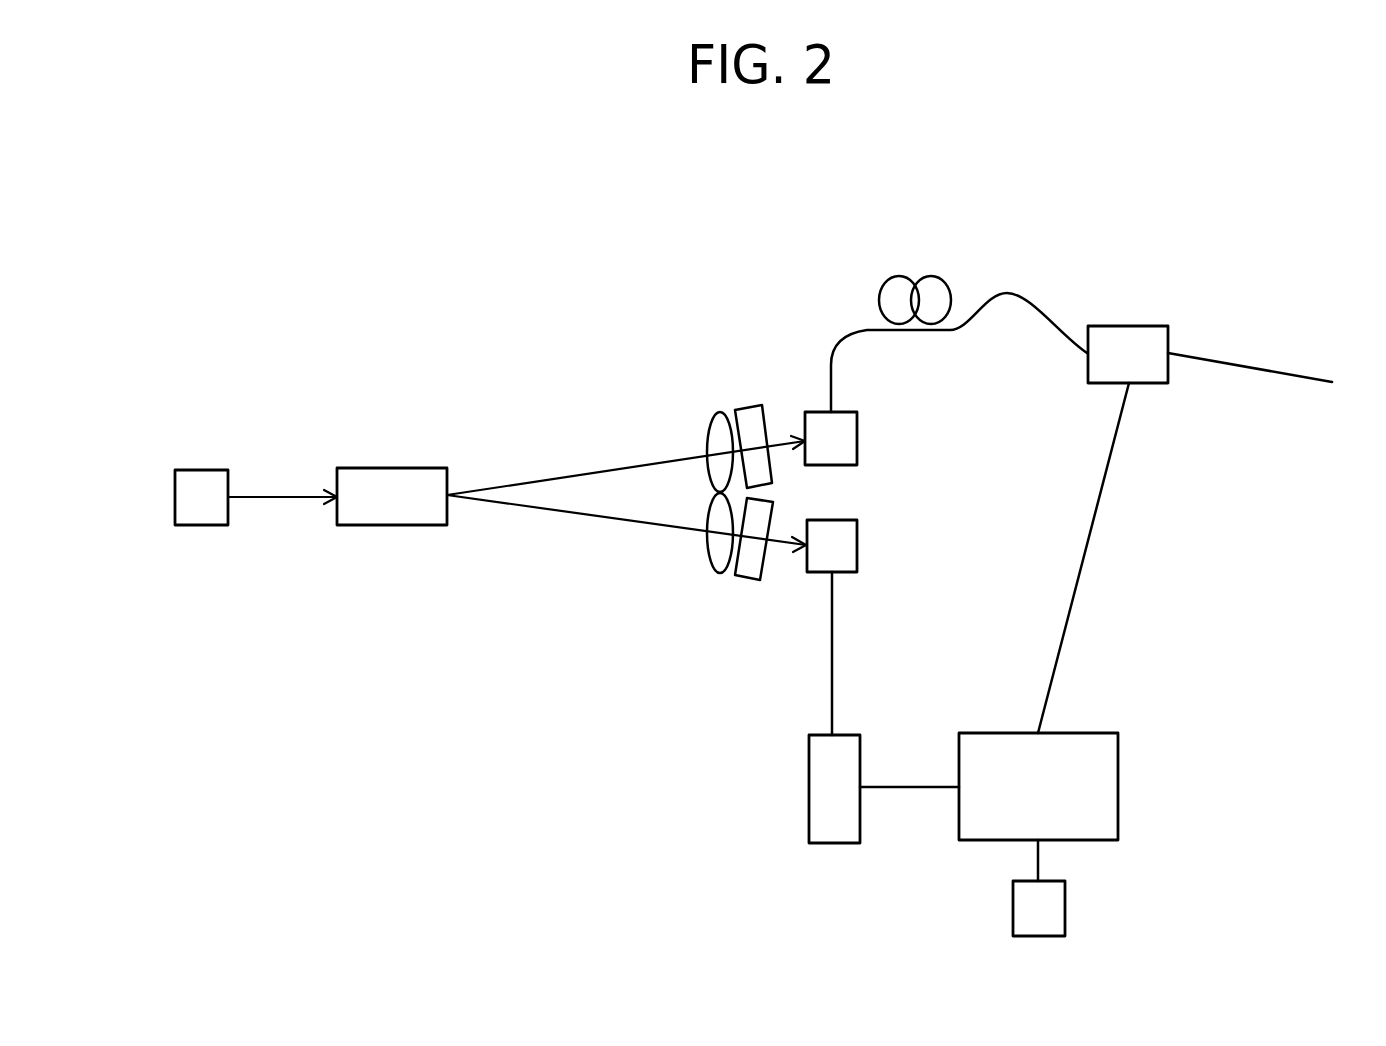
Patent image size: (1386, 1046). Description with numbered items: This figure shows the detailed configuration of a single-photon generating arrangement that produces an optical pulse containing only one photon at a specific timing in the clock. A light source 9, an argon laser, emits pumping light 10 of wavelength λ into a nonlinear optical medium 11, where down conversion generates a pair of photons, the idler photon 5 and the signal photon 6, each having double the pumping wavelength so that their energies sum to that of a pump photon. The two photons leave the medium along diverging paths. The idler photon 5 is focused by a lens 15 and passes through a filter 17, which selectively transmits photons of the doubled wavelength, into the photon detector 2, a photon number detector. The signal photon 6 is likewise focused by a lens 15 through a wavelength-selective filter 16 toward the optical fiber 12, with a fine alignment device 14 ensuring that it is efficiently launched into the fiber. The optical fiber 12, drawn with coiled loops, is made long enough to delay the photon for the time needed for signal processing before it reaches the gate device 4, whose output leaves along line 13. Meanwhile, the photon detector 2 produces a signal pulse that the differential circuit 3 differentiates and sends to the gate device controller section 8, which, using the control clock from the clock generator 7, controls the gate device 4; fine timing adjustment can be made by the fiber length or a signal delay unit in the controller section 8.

The photon detector 2 is at (842, 547).
The differential circuit 3 is at (838, 823).
The gate device 4 is at (1128, 343).
The idler photon 5 is at (578, 517).
The signal photon 6 is at (550, 477).
The clock generator 7 is at (1050, 913).
The gate device controller section 8 is at (1097, 795).
The light source 9 is at (203, 507).
The pumping light 10 is at (278, 497).
The nonlinear optical medium 11 is at (400, 505).
The optical fiber 12 is at (1010, 293).
The output line 13 is at (1270, 368).
The fine alignment device 14 is at (820, 428).
The lens 15 is at (723, 523).
The filter 16 is at (752, 418).
The filter 17 is at (753, 565).